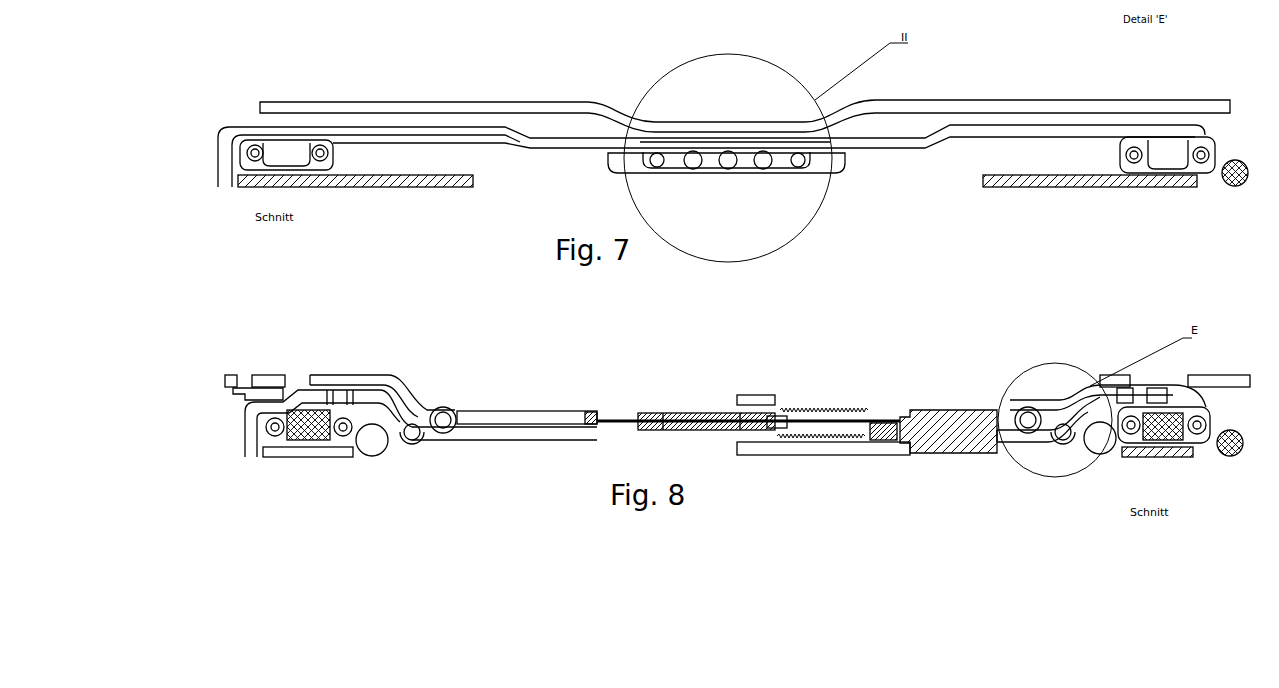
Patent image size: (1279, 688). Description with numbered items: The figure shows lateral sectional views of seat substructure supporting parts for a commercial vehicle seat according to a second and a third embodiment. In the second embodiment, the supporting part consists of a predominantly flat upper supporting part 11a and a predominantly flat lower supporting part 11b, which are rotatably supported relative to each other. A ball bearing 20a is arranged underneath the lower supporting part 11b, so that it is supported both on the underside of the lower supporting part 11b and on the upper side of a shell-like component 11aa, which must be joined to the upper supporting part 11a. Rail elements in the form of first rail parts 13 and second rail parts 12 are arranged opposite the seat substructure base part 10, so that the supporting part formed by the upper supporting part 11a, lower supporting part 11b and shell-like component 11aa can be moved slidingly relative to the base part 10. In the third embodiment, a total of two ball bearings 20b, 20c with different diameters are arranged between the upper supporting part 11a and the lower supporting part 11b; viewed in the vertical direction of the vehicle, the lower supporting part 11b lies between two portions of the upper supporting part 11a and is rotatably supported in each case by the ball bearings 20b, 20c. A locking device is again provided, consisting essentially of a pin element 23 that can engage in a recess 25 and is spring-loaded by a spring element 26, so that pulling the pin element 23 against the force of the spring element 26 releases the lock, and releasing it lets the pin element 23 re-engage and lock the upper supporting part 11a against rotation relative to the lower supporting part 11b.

In FIG. 7, the seat substructure base part 10 is at (470, 186).
In FIG. 8, the seat substructure base part 10 is at (303, 453).
In FIG. 7, the upper supporting part 11a is at (587, 103).
In FIG. 8, the upper supporting part 11a is at (430, 405).
In FIG. 7, the shell-like component 11aa is at (836, 164).
In FIG. 7, the lower supporting part 11b is at (403, 135).
In FIG. 8, the lower supporting part 11b is at (245, 428).
In FIG. 7, the second rail parts 12 is at (292, 172).
In FIG. 8, the second rail parts 12 is at (318, 440).
In FIG. 7, the first rail parts 13 is at (294, 140).
In FIG. 8, the first rail parts 13 is at (266, 436).
In FIG. 7, the ball bearing 20a is at (729, 166).
In FIG. 8, the ball bearing 20b is at (448, 416).
In FIG. 8, the ball bearing 20c is at (413, 440).
In FIG. 8, the pin element 23 is at (695, 412).
In FIG. 8, the recess 25 is at (590, 412).
In FIG. 8, the spring element 26 is at (838, 438).